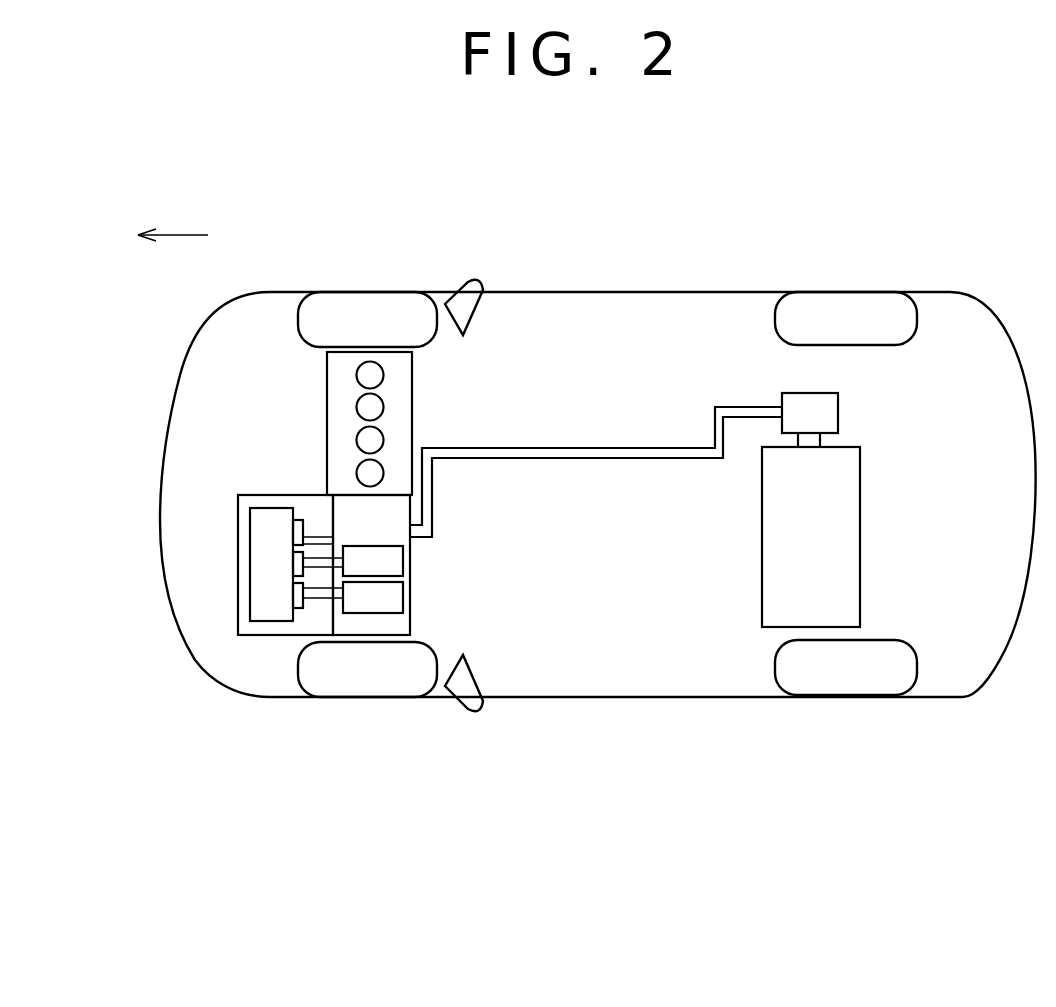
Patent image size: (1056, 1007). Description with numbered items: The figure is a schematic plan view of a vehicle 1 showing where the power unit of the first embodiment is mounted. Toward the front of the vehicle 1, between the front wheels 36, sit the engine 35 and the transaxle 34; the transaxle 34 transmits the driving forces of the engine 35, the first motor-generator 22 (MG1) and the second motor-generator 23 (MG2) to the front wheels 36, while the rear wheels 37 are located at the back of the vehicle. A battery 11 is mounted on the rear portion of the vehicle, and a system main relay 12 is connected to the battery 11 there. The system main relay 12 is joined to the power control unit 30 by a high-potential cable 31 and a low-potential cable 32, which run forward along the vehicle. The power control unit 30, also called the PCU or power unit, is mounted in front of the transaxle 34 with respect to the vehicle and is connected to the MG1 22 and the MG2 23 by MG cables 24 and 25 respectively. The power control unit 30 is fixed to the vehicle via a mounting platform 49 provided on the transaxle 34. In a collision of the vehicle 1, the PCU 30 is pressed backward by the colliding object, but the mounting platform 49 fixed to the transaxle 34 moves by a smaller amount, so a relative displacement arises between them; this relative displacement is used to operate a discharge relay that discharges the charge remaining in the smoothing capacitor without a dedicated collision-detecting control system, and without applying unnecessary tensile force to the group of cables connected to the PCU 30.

The vehicle 1 is at (614, 182).
The battery 11 is at (860, 517).
The system main relay 12 is at (838, 413).
The first motor-generator 22 is at (410, 598).
The second motor-generator 23 is at (403, 560).
The MG cable 24 is at (316, 606).
The MG cable 25 is at (322, 555).
The power control unit 30 is at (249, 593).
The high-potential cable 31 is at (643, 445).
The low-potential cable 32 is at (622, 459).
The transaxle 34 is at (410, 582).
The engine 35 is at (412, 398).
The front wheels 36 is at (372, 291).
The rear wheels 37 is at (853, 291).
The mounting platform 49 is at (263, 636).